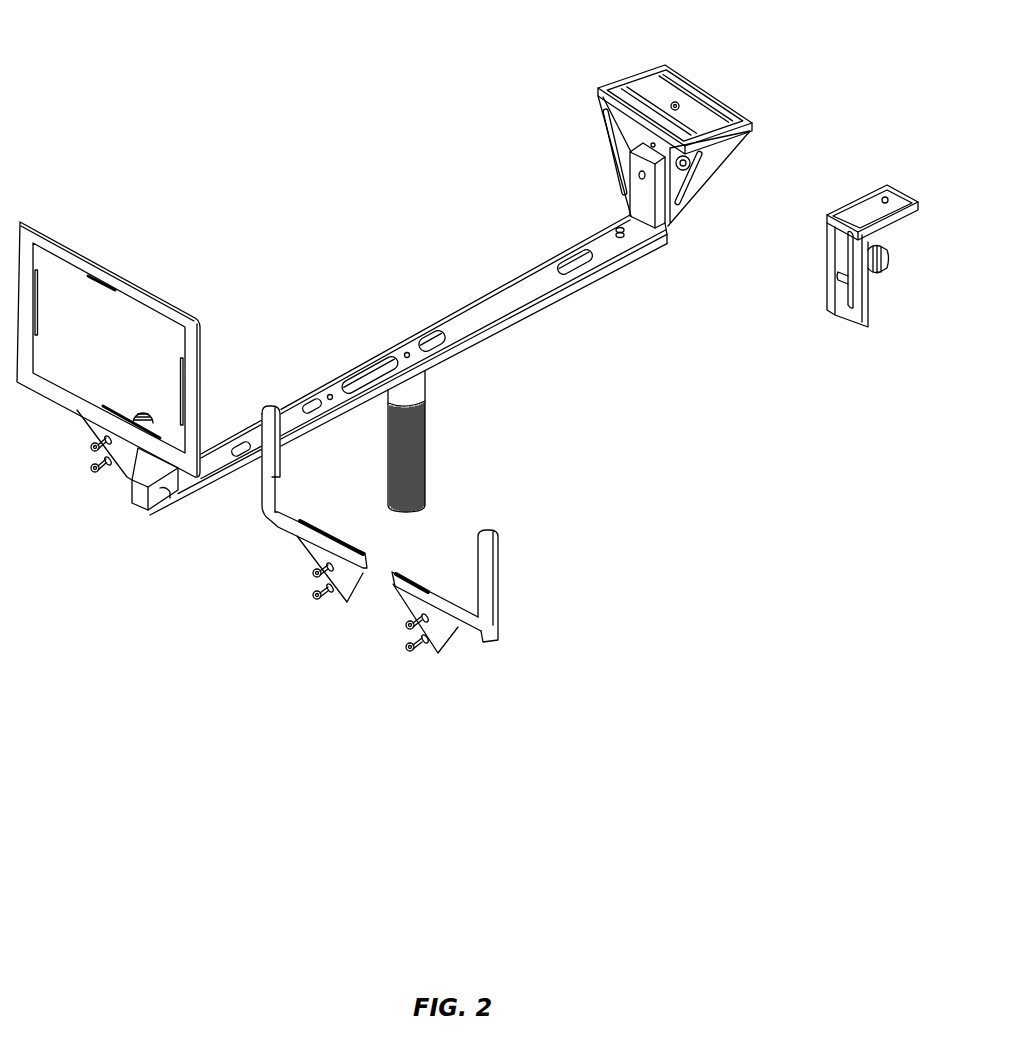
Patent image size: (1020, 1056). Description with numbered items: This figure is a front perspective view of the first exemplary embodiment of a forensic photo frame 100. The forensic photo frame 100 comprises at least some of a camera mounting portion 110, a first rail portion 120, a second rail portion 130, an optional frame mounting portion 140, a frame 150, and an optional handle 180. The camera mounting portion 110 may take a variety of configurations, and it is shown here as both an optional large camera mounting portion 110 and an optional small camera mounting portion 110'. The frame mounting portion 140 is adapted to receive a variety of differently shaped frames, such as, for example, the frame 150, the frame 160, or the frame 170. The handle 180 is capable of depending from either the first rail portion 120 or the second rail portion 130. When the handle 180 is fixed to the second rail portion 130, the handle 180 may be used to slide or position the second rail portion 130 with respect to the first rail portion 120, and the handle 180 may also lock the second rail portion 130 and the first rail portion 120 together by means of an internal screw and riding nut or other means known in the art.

The forensic photo frame 100 is at (294, 54).
The camera mounting portion 110 is at (702, 128).
The small camera mounting portion 110' is at (807, 256).
The first rail portion 120 is at (519, 272).
The second rail portion 130 is at (240, 428).
The frame mounting portion 140 is at (122, 492).
The frame 150 is at (124, 263).
The frame 160 is at (286, 541).
The frame 170 is at (504, 594).
The handle 180 is at (436, 423).